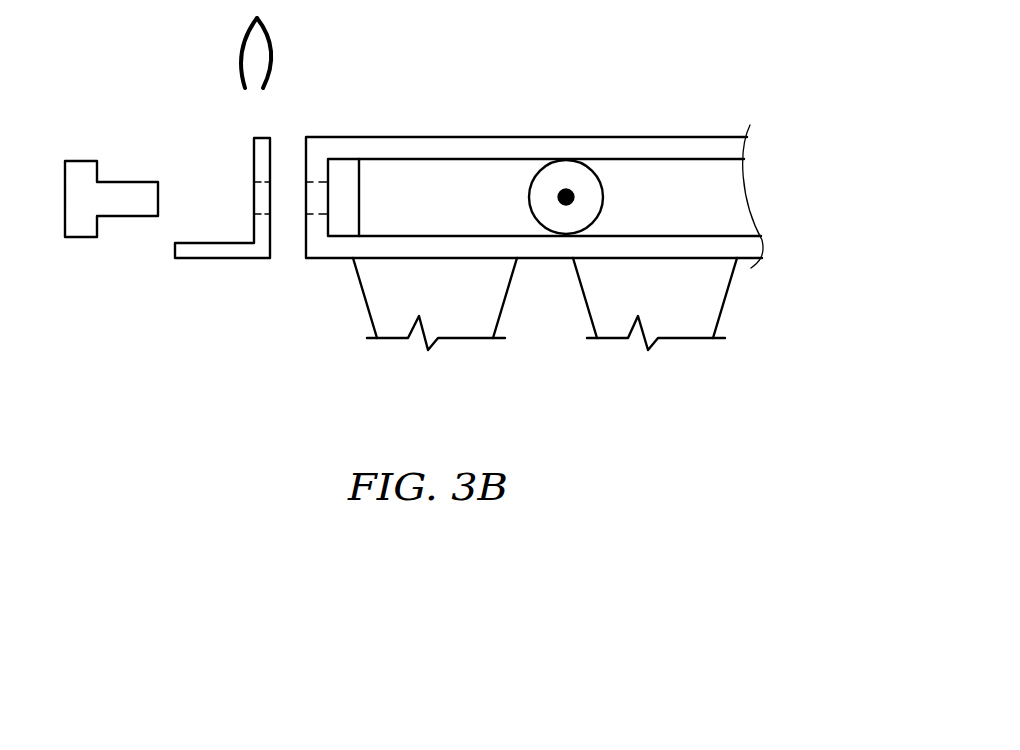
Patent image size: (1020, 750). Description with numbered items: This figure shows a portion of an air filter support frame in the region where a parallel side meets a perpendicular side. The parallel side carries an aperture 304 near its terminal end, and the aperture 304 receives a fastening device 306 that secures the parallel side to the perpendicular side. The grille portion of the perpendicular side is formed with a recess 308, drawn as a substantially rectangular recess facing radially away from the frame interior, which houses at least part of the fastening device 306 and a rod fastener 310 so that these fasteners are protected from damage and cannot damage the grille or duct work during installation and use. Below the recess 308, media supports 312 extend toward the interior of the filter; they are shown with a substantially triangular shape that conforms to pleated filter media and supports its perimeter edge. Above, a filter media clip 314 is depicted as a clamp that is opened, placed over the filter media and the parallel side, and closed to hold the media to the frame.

The aperture 304 is at (306, 192).
The fastening device 306 is at (113, 159).
The recess 308 is at (716, 197).
The rod fastener 310 is at (571, 167).
The media supports 312 is at (727, 293).
The filter media clip 314 is at (273, 34).